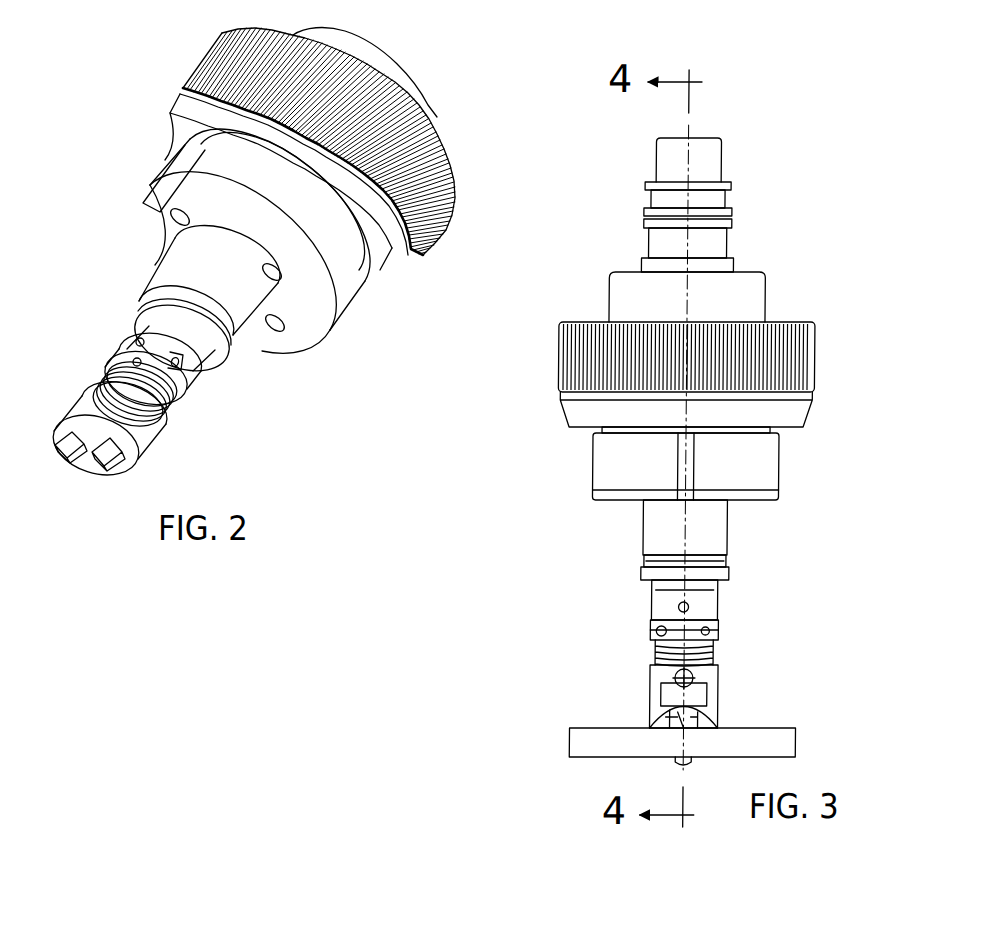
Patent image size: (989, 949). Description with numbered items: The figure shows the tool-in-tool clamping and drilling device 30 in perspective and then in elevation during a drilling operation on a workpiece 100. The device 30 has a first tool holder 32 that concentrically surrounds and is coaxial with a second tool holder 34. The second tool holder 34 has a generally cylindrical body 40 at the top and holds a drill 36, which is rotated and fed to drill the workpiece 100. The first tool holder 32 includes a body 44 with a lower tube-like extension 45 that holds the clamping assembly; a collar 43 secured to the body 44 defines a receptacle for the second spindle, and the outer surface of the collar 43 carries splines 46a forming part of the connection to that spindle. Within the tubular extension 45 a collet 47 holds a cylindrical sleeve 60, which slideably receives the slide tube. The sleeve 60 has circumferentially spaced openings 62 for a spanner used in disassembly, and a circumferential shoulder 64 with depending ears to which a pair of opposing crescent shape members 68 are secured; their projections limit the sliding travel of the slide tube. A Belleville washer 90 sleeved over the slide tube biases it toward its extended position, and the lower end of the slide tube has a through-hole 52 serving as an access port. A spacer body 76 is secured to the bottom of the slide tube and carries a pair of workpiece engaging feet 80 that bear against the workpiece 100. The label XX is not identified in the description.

In FIG. 2, the tool-in-tool clamping and drilling device 30 is at (130, 56).
In FIG. 2, the first tool holder 32 is at (277, 476).
In FIG. 3, the first tool holder 32 is at (776, 538).
In FIG. 2, the second tool holder 34 is at (414, 297).
In FIG. 3, the second tool holder 34 is at (794, 237).
In FIG. 3, the drill 36 is at (684, 713).
In FIG. 3, the cylindrical body 40 is at (708, 162).
In FIG. 2, the collar 43 is at (388, 255).
In FIG. 3, the collar 43 is at (586, 408).
In FIG. 2, the body 44 is at (417, 115).
In FIG. 3, the body 44 is at (628, 300).
In FIG. 2, the tube-like extension 45 is at (178, 277).
In FIG. 3, the tube-like extension 45 is at (722, 517).
In FIG. 2, the splines 46a is at (427, 227).
In FIG. 3, the splines 46a is at (794, 355).
In FIG. 2, the collet 47 is at (172, 310).
In FIG. 3, the collet 47 is at (663, 587).
In FIG. 3, the through-hole 52 is at (703, 677).
In FIG. 2, the cylindrical sleeve 60 is at (218, 364).
In FIG. 3, the cylindrical sleeve 60 is at (646, 596).
In FIG. 3, the openings 62 is at (676, 607).
In FIG. 2, the circumferential shoulder 64 is at (185, 388).
In FIG. 3, the circumferential shoulder 64 is at (712, 607).
In FIG. 2, the crescent shape members 68 is at (165, 358).
In FIG. 3, the crescent shape members 68 is at (722, 633).
In FIG. 2, the spacer body 76 is at (120, 442).
In FIG. 3, the spacer body 76 is at (656, 692).
In FIG. 3, the workpiece engaging feet 80 is at (716, 722).
In FIG. 2, the Belleville washer 90 is at (150, 423).
In FIG. 3, the Belleville washer 90 is at (665, 643).
In FIG. 3, the workpiece 100 is at (781, 742).
In FIG. 2, the prongs XX is at (66, 446).